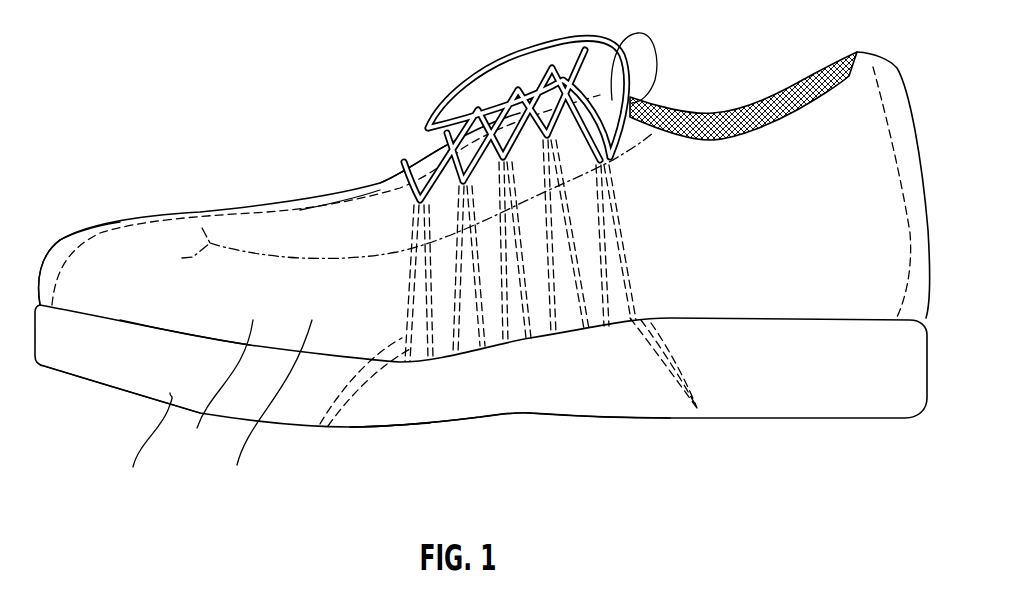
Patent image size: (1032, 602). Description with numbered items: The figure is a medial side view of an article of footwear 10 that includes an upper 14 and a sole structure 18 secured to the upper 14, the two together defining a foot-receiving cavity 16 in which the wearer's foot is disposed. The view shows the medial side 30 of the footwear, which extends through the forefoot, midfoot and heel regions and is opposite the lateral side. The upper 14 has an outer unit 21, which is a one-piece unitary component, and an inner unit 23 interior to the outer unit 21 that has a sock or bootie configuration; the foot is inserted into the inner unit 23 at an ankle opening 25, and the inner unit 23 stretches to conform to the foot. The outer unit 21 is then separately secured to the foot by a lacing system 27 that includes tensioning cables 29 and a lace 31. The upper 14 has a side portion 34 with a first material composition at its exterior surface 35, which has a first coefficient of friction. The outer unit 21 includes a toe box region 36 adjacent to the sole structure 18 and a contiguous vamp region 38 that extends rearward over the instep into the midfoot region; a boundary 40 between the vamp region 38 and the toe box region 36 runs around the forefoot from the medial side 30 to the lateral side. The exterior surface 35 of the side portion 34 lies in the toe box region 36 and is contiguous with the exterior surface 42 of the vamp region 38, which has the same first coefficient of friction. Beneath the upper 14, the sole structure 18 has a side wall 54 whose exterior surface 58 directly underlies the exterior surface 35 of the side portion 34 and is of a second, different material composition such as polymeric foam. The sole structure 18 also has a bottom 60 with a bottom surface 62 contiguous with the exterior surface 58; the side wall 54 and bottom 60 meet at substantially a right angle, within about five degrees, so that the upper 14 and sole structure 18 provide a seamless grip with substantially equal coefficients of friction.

The article of footwear 10 is at (193, 44).
The upper 14 is at (186, 179).
The foot-receiving cavity 16 is at (691, 190).
The sole structure 18 is at (123, 424).
The outer unit 21 is at (863, 145).
The inner unit 23 is at (813, 77).
The ankle opening 25 is at (773, 93).
The lacing system 27 is at (377, 136).
The tensioning cables 29 is at (317, 430).
The medial side 30 is at (268, 410).
The lace 31 is at (430, 113).
The side portion 34 is at (218, 392).
The exterior surface 35 is at (210, 304).
The toe box region 36 is at (112, 253).
The vamp region 38 is at (247, 240).
The boundary 40 is at (182, 258).
The exterior surface of the vamp region 42 is at (296, 229).
The side wall 54 is at (145, 447).
The exterior surface of the side wall 58 is at (132, 389).
The bottom 60 is at (522, 415).
The bottom surface 62 is at (376, 436).